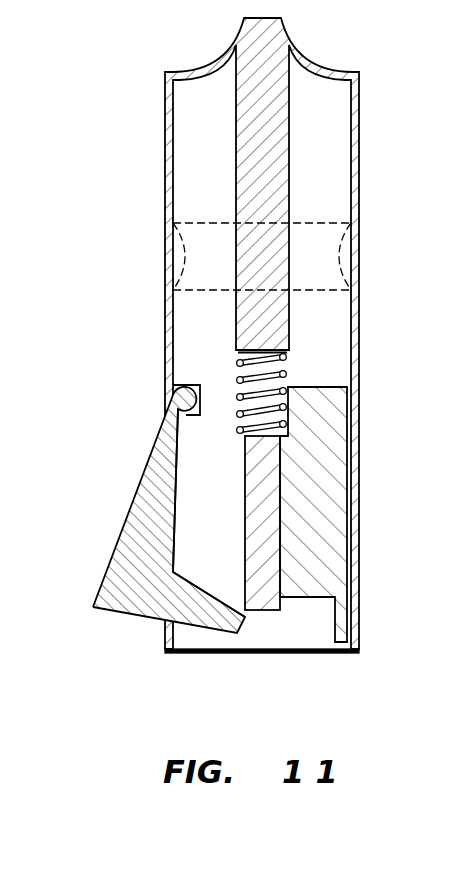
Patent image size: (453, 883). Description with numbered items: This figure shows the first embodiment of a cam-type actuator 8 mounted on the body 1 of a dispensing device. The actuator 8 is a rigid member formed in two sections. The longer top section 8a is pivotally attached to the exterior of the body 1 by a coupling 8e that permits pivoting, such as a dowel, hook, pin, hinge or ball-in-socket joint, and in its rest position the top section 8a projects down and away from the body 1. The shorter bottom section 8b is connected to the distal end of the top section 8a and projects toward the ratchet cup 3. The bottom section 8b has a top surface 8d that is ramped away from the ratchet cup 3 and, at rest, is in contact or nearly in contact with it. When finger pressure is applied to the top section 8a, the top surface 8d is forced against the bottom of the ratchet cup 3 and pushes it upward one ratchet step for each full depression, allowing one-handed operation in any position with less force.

The body 1 is at (367, 412).
The ratchet cup 3 is at (307, 598).
The actuator 8 is at (133, 528).
The top section 8a is at (140, 485).
The bottom section 8b is at (140, 616).
The top surface 8d is at (183, 570).
The coupling 8e is at (170, 398).